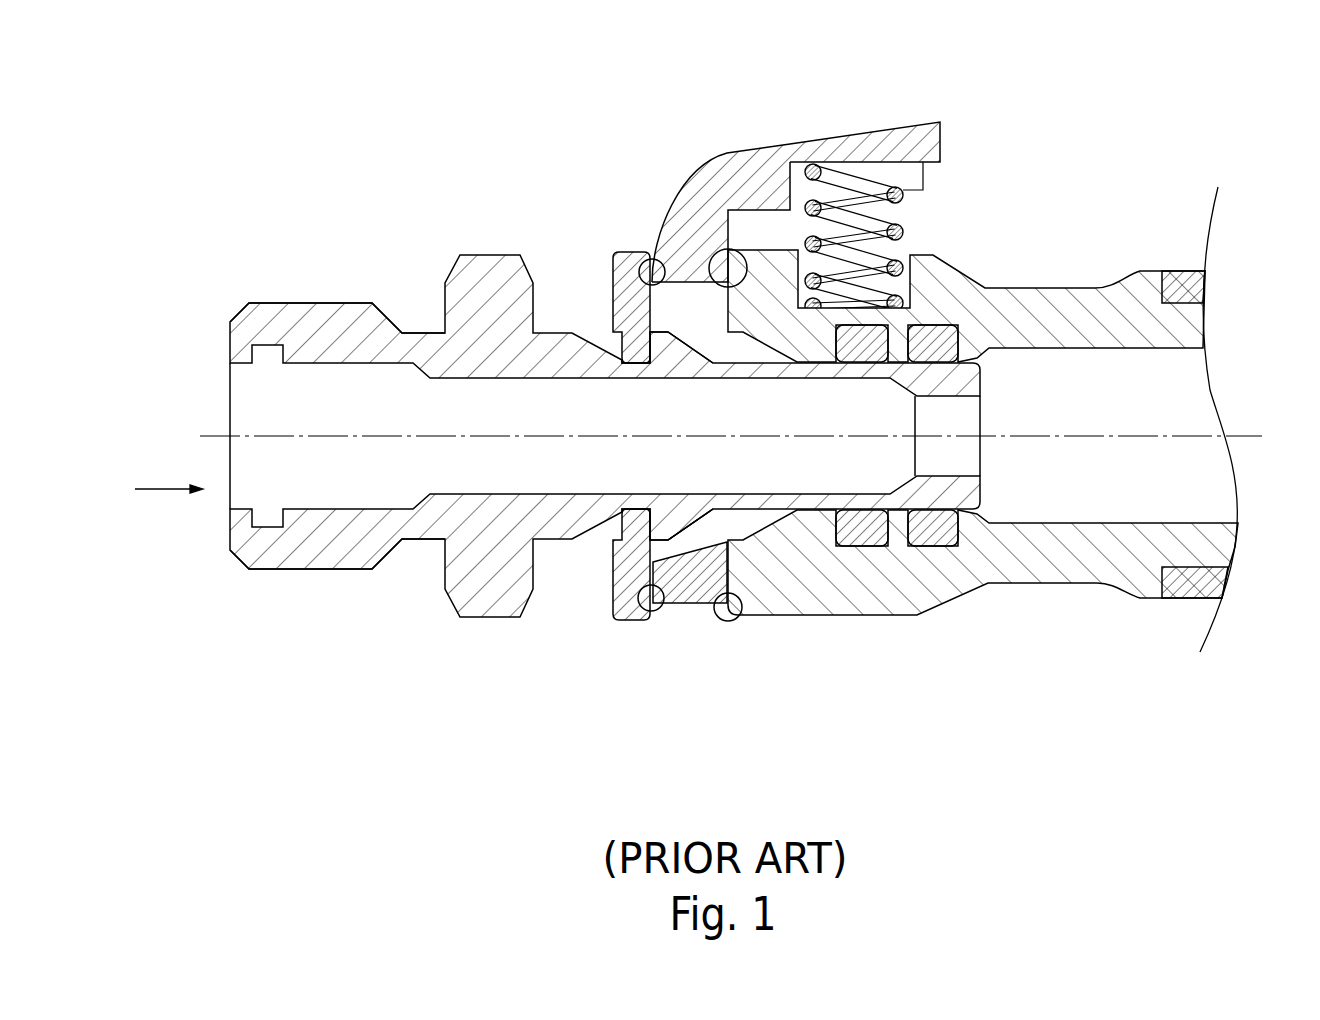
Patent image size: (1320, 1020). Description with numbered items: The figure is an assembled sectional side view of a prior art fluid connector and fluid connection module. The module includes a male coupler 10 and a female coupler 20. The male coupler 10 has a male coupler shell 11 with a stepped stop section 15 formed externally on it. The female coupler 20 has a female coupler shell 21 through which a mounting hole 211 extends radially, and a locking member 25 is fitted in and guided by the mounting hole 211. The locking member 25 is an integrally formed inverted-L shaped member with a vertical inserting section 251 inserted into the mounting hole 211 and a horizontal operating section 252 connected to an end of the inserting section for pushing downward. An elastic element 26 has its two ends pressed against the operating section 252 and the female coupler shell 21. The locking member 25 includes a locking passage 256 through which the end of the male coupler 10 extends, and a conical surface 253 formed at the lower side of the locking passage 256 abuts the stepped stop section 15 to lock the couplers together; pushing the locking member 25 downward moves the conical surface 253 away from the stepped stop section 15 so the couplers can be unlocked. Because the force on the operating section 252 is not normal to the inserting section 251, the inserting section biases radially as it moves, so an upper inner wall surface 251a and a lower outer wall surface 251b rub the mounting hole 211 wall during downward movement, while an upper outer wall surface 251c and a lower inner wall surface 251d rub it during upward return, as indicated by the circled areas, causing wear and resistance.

The male coupler 10 is at (267, 250).
The male coupler shell 11 is at (325, 303).
The stepped stop section 15 is at (657, 520).
The female coupler 20 is at (983, 344).
The female coupler shell 21 is at (1077, 288).
The mounting hole 211 is at (648, 318).
The locking member 25 is at (750, 400).
The vertical inserting section 251 is at (660, 253).
The upper inner wall surface 251a is at (722, 249).
The lower outer wall surface 251b is at (641, 610).
The upper outer wall surface 251c is at (652, 257).
The lower inner wall surface 251d is at (733, 615).
The horizontal operating section 252 is at (833, 137).
The conical surface 253 is at (671, 565).
The locking passage 256 is at (713, 530).
The elastic element 26 is at (905, 225).